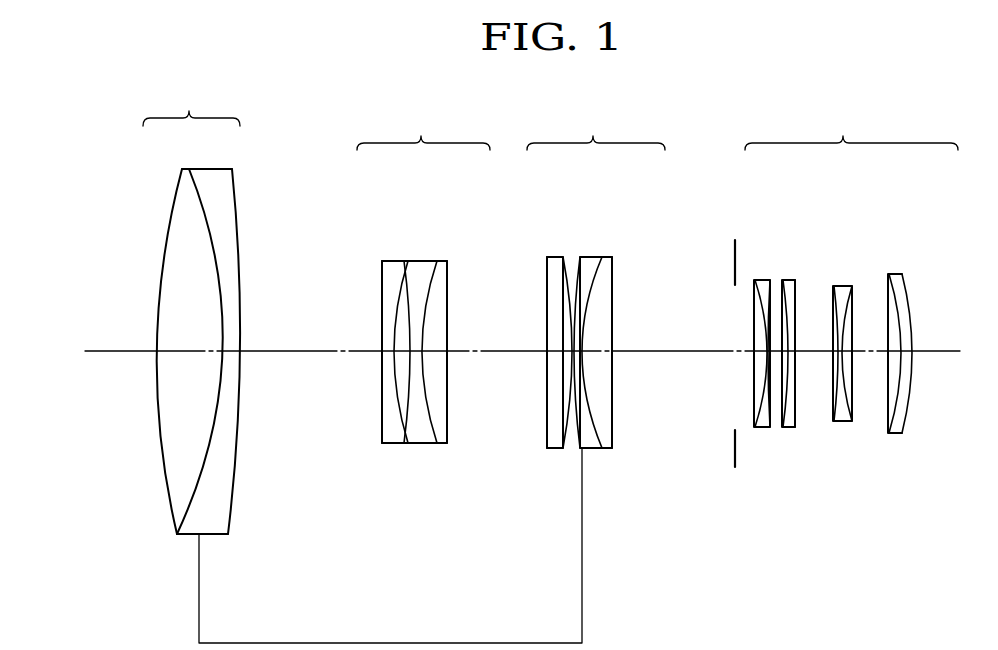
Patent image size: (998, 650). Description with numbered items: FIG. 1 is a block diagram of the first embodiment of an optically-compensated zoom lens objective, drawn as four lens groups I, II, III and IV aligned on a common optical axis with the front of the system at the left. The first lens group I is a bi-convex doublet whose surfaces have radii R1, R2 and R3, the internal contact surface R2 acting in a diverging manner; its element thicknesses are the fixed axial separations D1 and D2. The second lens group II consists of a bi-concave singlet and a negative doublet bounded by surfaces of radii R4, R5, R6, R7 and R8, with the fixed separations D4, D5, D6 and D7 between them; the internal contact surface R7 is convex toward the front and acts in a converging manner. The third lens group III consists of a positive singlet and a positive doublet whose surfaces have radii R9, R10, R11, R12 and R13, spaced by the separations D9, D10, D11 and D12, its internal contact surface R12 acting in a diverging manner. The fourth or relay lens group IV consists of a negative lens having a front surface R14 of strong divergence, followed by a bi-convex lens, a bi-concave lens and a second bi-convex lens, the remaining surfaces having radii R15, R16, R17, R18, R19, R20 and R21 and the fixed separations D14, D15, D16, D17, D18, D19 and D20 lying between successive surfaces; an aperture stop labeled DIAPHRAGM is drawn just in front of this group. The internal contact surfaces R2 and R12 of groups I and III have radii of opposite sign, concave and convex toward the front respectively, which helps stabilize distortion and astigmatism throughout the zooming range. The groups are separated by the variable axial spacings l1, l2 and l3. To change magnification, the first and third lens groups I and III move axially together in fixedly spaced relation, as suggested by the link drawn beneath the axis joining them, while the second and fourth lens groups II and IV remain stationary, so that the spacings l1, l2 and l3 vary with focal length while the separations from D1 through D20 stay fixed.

The first lens group I is at (191, 100).
The second lens group II is at (423, 127).
The third lens group III is at (596, 127).
The relay lens group IV is at (851, 127).
The lens surface R1 is at (181, 182).
The internal contact surface R2 is at (191, 177).
The lens surface R3 is at (239, 182).
The lens surface R4 is at (381, 268).
The lens surface R5 is at (401, 264).
The lens surface R6 is at (413, 264).
The internal contact surface R7 is at (436, 264).
The lens surface R8 is at (449, 268).
The lens surface R9 is at (548, 265).
The lens surface R10 is at (564, 262).
The lens surface R11 is at (580, 262).
The internal contact surface R12 is at (601, 262).
The lens surface R13 is at (612, 265).
The front surface R14 is at (754, 287).
The lens surface R15 is at (770, 284).
The lens surface R16 is at (782, 284).
The lens surface R17 is at (796, 284).
The lens surface R18 is at (834, 290).
The lens surface R19 is at (852, 290).
The lens surface R20 is at (889, 278).
The lens surface R21 is at (903, 278).
The fixed axial separation D1 is at (186, 353).
The fixed axial separation D2 is at (222, 355).
The fixed axial separation D4 is at (385, 432).
The fixed axial separation D5 is at (400, 446).
The fixed axial separation D6 is at (425, 446).
The fixed axial separation D7 is at (445, 432).
The fixed axial separation D9 is at (548, 432).
The fixed axial separation D10 is at (566, 446).
The fixed axial separation D11 is at (600, 446).
The fixed axial separation D12 is at (612, 432).
The fixed axial separation D14 is at (754, 427).
The fixed axial separation D15 is at (772, 427).
The fixed axial separation D16 is at (795, 420).
The fixed axial separation D17 is at (833, 412).
The fixed axial separation D18 is at (851, 421).
The fixed axial separation D19 is at (888, 425).
The fixed axial separation D20 is at (905, 435).
The variable axial spacing l1 is at (314, 352).
The variable axial spacing l2 is at (495, 352).
The variable axial spacing l3 is at (685, 352).
The diaphragm (aperture stop) DIAPHRAGM is at (732, 452).